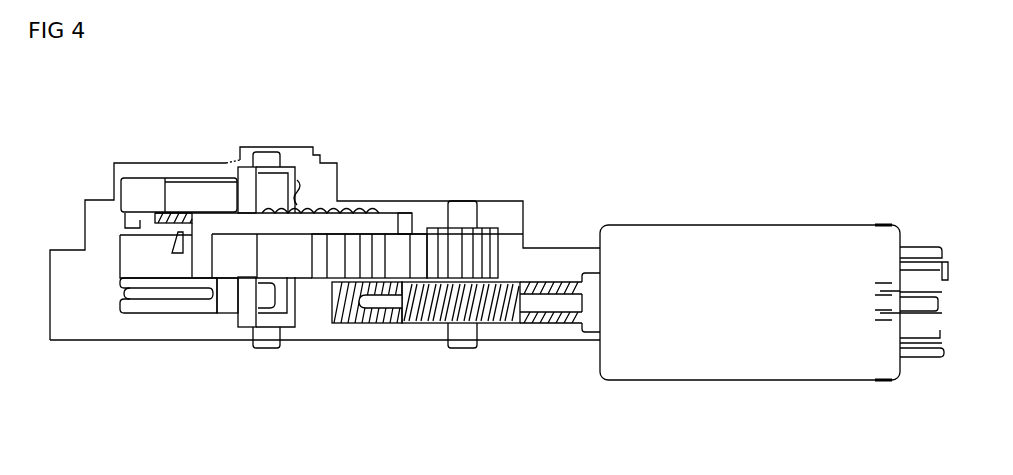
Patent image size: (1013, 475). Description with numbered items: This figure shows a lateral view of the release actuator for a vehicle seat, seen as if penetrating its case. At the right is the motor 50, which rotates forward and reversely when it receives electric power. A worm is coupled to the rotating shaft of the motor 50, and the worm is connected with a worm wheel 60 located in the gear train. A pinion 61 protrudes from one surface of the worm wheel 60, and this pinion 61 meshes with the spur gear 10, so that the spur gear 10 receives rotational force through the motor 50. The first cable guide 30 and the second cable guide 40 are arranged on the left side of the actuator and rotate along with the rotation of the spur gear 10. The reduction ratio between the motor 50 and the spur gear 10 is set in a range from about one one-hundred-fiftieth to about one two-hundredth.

The spur gear 10 is at (382, 263).
The first cable guide 30 is at (182, 313).
The second cable guide 40 is at (187, 195).
The motor 50 is at (650, 248).
The worm wheel 60 is at (480, 252).
The pinion 61 is at (490, 317).